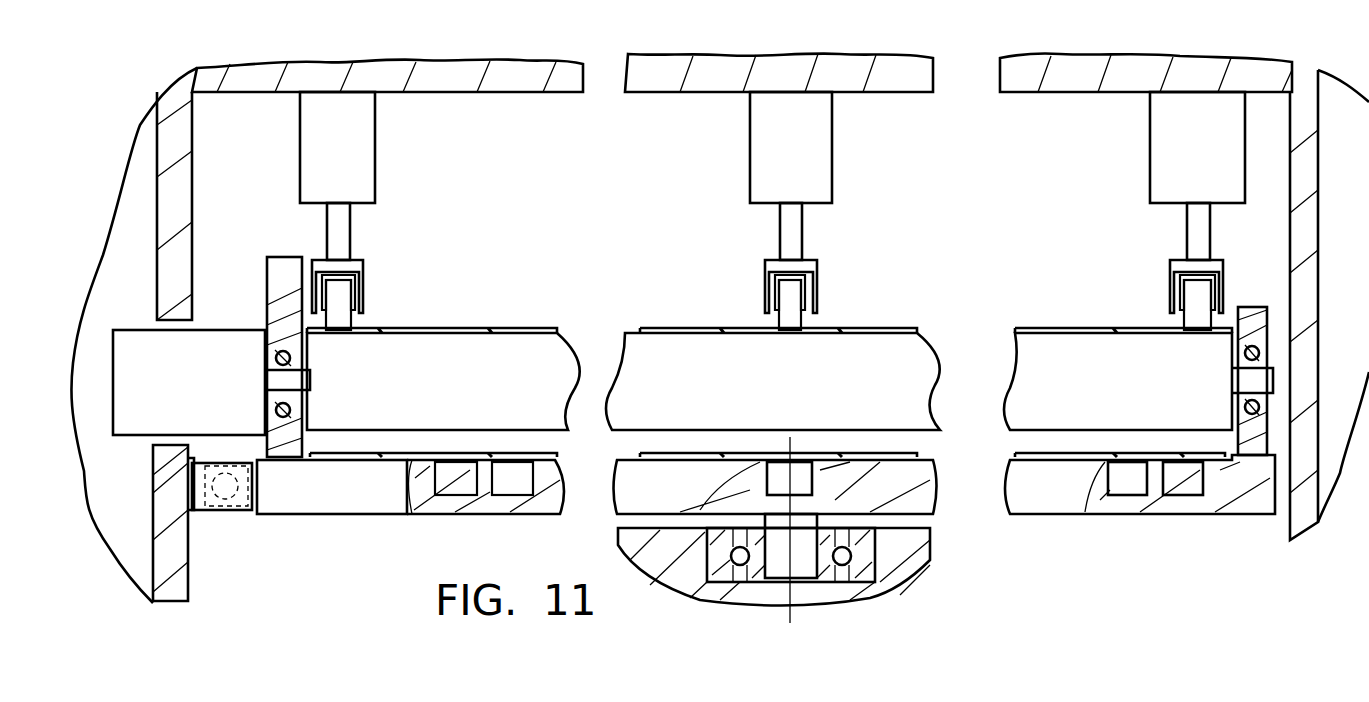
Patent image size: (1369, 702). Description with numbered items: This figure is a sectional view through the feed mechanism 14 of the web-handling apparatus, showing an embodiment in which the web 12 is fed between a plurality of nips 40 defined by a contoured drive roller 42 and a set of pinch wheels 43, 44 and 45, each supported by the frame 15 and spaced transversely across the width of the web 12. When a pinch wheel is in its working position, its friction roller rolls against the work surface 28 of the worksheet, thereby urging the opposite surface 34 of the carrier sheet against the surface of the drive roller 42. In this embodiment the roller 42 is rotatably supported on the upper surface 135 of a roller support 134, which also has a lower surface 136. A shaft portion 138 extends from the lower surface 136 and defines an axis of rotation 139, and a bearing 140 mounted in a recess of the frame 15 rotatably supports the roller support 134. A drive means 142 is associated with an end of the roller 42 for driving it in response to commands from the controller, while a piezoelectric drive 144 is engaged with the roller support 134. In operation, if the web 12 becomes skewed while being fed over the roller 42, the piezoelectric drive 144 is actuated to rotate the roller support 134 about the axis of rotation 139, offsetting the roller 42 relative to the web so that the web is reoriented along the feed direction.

The web 12 is at (1099, 352).
The feed mechanism 14 is at (518, 527).
The frame 15 is at (456, 76).
The work surface 28 is at (1073, 332).
The opposite surface 34 is at (1092, 342).
The nip 40 is at (363, 322).
The contoured drive roller 42 is at (522, 348).
The pinch wheel 43 is at (392, 274).
The pinch wheel 44 is at (748, 270).
The pinch wheel 45 is at (1157, 267).
The roller support 134 is at (347, 520).
The upper surface 135 is at (382, 453).
The lower surface 136 is at (410, 485).
The shaft portion 138 is at (803, 525).
The axis of rotation 139 is at (797, 590).
The bearing 140 is at (867, 542).
The drive means 142 is at (221, 344).
The piezoelectric drive 144 is at (225, 468).